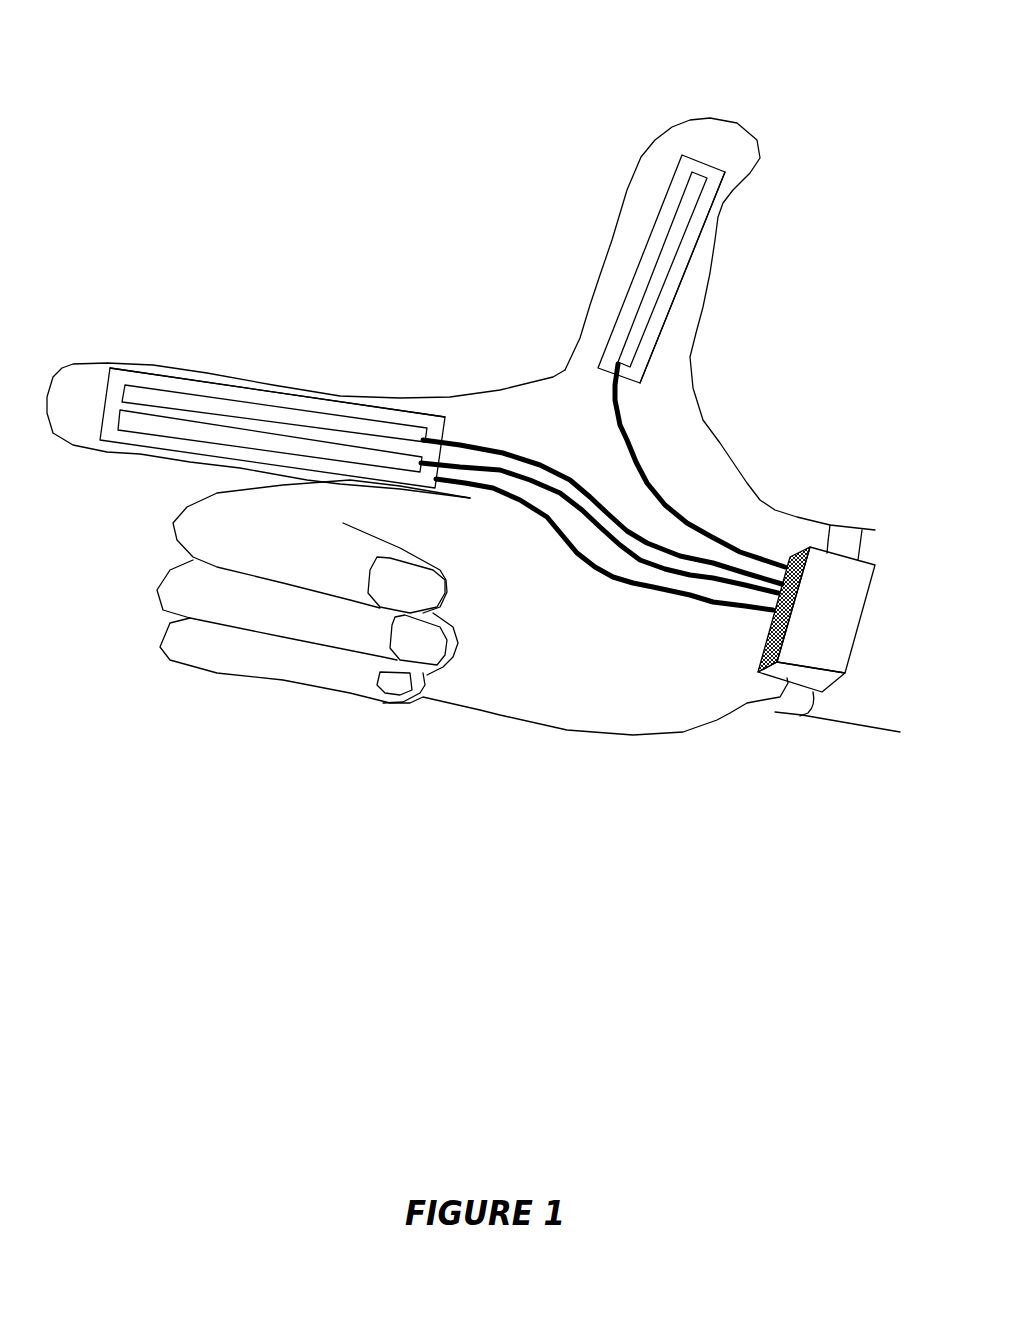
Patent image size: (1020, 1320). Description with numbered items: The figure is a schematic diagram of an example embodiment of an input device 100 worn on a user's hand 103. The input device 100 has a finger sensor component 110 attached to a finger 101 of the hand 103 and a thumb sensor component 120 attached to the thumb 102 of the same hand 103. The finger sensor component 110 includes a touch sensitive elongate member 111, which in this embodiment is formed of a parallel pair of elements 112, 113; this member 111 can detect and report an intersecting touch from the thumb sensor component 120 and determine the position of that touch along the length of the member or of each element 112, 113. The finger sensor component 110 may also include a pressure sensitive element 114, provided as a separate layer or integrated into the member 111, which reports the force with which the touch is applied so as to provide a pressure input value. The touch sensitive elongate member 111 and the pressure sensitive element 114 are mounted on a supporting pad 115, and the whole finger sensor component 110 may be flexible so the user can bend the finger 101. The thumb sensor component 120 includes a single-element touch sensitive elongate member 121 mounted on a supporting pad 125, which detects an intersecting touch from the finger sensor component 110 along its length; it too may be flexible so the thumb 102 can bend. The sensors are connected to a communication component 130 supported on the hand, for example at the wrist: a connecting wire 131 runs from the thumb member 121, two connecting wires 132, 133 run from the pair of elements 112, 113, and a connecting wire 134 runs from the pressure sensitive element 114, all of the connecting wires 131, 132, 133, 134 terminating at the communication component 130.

The input device 100 is at (230, 67).
The finger 101 is at (78, 368).
The thumb 102 is at (712, 117).
The user's hand 103 is at (468, 703).
The finger sensor component 110 is at (277, 379).
The touch sensitive elongate member 111 is at (272, 354).
The element 112 is at (240, 403).
The element 113 is at (320, 450).
The pressure sensitive element 114 is at (193, 441).
The supporting pad 115 is at (400, 413).
The thumb sensor component 120 is at (685, 269).
The touch sensitive elongate member 121 is at (670, 260).
The supporting pad 125 is at (667, 318).
The communication component 130 is at (808, 642).
The connecting wire 131 is at (695, 522).
The connecting wire 132 is at (642, 542).
The connecting wire 133 is at (655, 566).
The connecting wire 134 is at (716, 598).